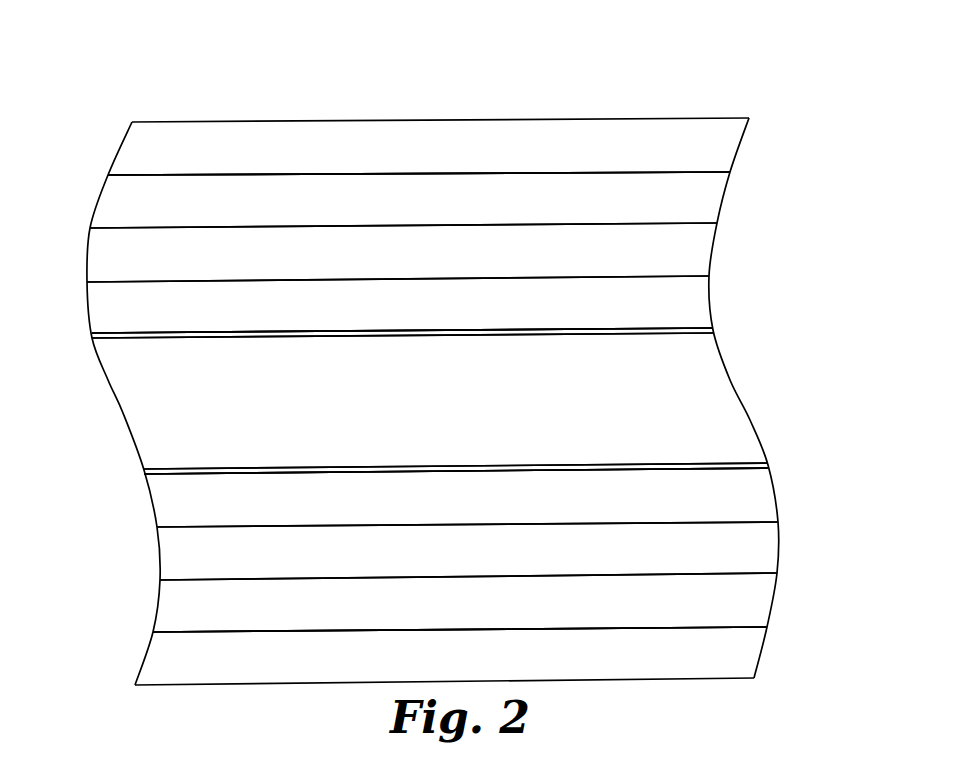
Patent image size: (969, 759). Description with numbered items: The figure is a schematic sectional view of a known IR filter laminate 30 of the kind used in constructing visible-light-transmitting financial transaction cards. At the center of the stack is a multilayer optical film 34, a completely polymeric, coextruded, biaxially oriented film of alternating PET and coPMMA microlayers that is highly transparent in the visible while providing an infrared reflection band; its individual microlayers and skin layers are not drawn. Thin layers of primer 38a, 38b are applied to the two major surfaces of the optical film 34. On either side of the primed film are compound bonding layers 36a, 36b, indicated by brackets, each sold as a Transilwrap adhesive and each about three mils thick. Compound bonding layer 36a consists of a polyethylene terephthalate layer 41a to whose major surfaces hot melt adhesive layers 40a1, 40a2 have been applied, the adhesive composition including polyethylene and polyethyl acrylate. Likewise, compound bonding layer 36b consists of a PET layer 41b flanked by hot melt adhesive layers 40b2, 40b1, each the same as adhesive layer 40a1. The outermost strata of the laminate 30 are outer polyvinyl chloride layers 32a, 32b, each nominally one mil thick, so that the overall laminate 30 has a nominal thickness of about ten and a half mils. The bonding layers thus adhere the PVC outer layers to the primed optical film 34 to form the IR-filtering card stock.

The IR filter laminate 30 is at (682, 93).
The outer polyvinyl chloride layer 32a is at (127, 148).
The outer polyvinyl chloride layer 32b is at (153, 662).
The multilayer optical film 34 is at (132, 417).
The compound bonding layer 36a is at (82, 175).
The compound bonding layer 36b is at (137, 477).
The primer layer 38a is at (97, 335).
The primer layer 38b is at (143, 468).
The hot melt adhesive layer 40a1 is at (712, 207).
The polyethylene terephthalate layer 41a is at (703, 253).
The hot melt adhesive layer 40a2 is at (700, 308).
The hot melt adhesive layer 40b2 is at (767, 503).
The polyethylene terephthalate layer 41b is at (766, 549).
The hot melt adhesive layer 40b1 is at (765, 604).